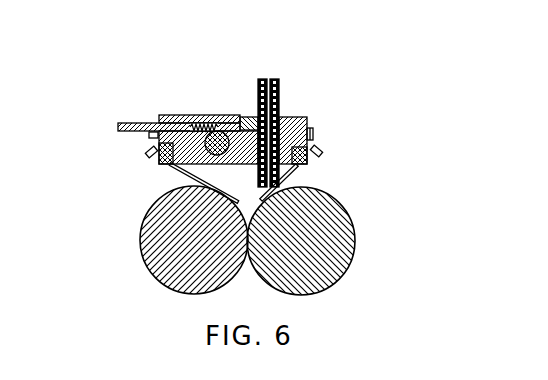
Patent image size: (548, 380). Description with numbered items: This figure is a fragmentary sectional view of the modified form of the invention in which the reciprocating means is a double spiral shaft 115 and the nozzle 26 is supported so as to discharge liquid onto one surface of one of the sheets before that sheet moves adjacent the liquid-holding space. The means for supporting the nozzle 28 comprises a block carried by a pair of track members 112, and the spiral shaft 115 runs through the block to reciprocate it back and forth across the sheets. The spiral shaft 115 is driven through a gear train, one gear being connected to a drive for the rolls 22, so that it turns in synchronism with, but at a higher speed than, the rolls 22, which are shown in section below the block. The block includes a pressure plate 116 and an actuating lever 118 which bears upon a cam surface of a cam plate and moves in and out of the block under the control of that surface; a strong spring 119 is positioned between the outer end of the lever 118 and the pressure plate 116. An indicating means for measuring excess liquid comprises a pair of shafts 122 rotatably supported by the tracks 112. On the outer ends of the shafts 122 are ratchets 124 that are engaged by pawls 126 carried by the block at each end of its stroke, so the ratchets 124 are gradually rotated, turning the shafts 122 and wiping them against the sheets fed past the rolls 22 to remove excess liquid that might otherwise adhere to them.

The rolls 22 is at (153, 267).
The nozzle 26 is at (279, 92).
The means for supporting the nozzle 28 is at (294, 116).
The track members 112 is at (308, 162).
The double spiral shaft 115 is at (208, 156).
The pressure plate 116 is at (250, 117).
The actuating lever 118 is at (128, 122).
The spring 119 is at (203, 123).
The shafts 122 is at (200, 180).
The ratchets 124 is at (145, 157).
The pawls 126 is at (313, 136).